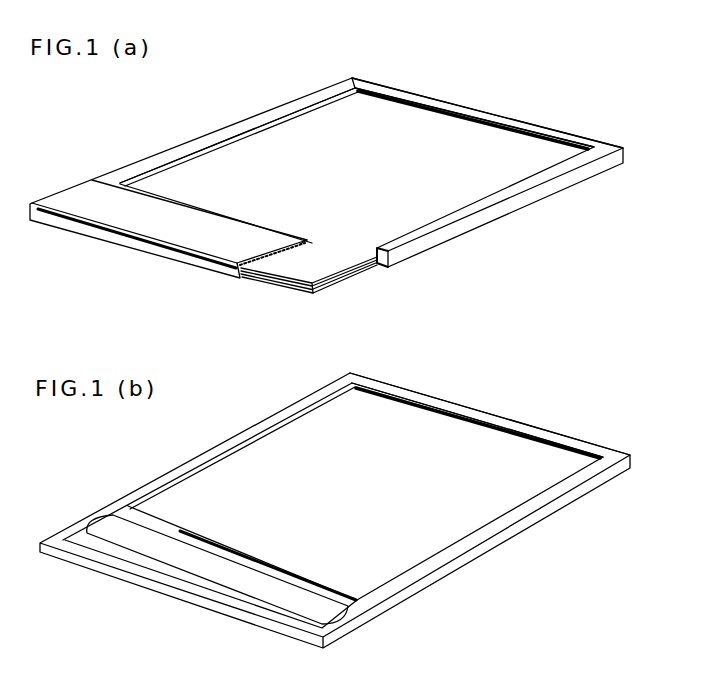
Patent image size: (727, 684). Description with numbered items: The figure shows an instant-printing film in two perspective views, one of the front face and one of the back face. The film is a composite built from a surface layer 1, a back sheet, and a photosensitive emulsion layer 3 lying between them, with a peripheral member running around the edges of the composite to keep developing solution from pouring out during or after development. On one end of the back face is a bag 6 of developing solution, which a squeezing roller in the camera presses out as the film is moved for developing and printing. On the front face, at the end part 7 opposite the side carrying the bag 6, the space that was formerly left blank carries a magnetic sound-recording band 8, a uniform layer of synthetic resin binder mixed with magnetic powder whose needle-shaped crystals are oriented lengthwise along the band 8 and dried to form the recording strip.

The surface layer 1 is at (350, 255).
The photosensitive emulsion layer 3 is at (303, 290).
The bag of developing solution 6 is at (187, 560).
The end part 7 is at (140, 190).
The magnetic sound-recording band 8 is at (78, 200).